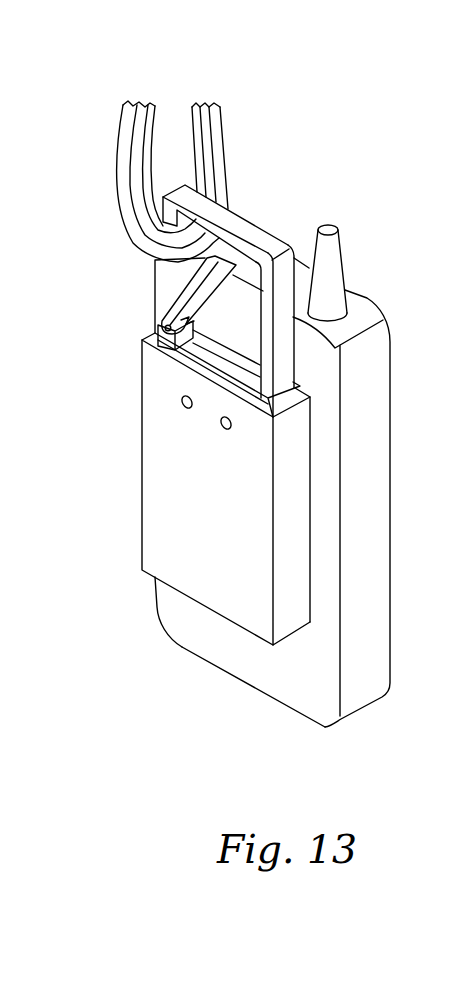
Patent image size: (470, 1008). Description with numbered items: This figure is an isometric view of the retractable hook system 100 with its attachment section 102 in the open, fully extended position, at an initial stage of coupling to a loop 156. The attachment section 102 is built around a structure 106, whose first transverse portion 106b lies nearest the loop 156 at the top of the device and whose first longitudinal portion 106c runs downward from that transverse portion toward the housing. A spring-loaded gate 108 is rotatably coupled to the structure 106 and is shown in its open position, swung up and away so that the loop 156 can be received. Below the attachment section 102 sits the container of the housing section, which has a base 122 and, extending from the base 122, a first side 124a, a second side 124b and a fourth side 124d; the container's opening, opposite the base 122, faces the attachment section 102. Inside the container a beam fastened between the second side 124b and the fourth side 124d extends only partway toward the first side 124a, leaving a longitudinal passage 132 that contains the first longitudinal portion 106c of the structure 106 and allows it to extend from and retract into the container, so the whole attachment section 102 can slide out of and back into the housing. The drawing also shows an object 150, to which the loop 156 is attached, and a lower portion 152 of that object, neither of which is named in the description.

The retractable hook system 100 is at (128, 458).
The attachment section 102 is at (142, 282).
The structure 106 is at (235, 217).
The first transverse portion 106b is at (267, 240).
The first longitudinal portion 106c is at (283, 340).
The spring-loaded gate 108 is at (182, 308).
The base 122 is at (207, 608).
The first side 124a is at (293, 597).
The second side 124b is at (167, 550).
The fourth side 124d is at (310, 543).
The longitudinal passage 132 is at (150, 339).
The portable device housing 150 is at (387, 245).
The bottom portion 152 is at (298, 667).
The strap 156 is at (127, 104).